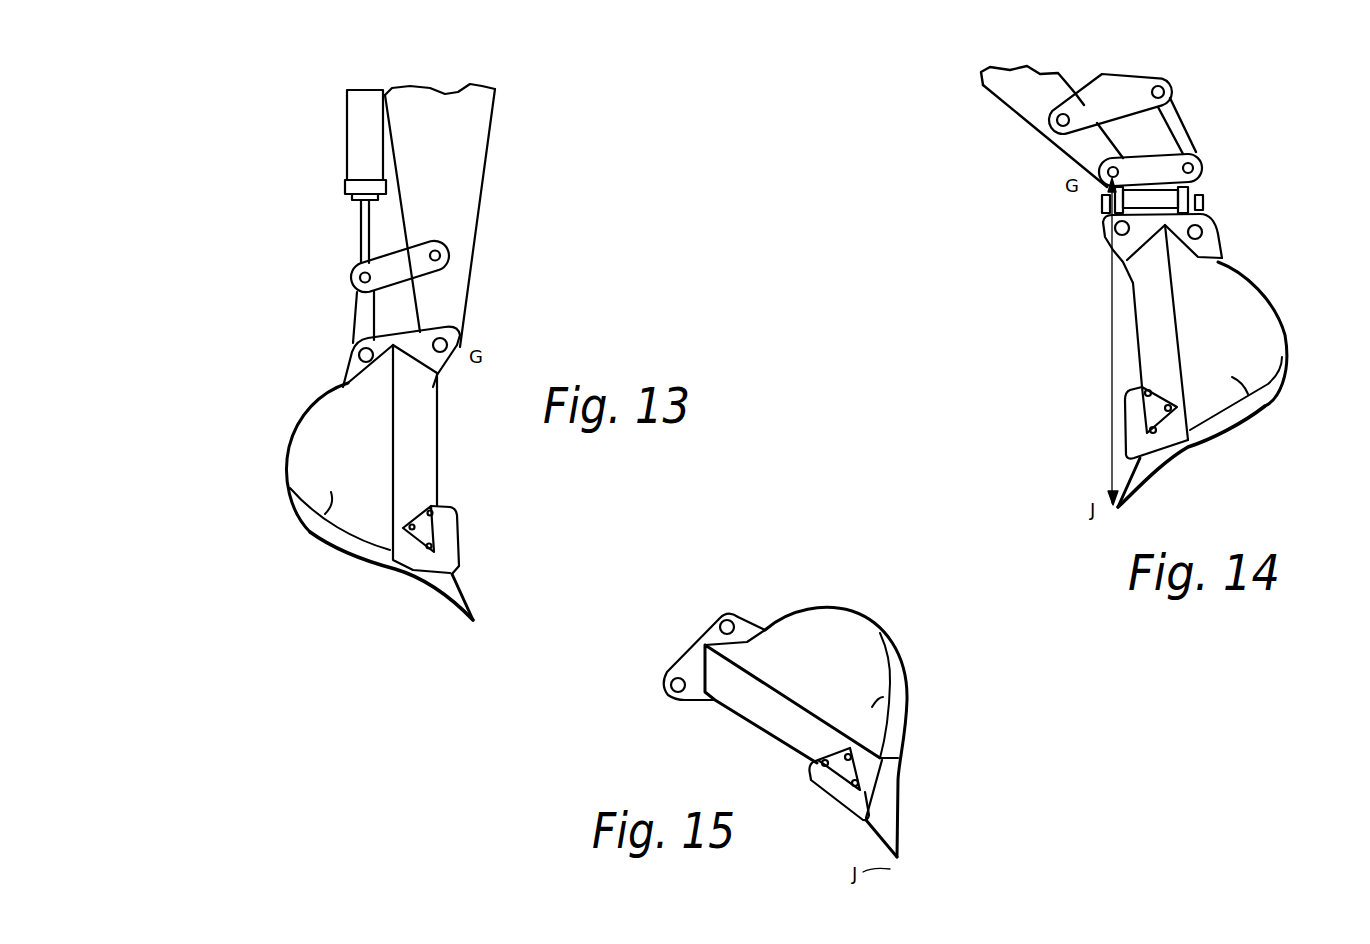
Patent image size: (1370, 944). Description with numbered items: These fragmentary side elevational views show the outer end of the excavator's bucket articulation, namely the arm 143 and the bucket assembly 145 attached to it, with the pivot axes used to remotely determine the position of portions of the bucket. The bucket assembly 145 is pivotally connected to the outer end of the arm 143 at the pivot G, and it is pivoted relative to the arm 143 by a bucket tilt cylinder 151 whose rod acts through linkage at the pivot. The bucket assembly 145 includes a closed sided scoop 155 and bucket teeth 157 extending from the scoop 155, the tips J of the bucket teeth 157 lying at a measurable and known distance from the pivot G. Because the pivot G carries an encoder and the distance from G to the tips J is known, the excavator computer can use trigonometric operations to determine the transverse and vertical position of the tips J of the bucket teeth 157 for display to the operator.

In FIG. 13, the arm 143 is at (475, 169).
In FIG. 14, the arm 143 is at (1013, 102).
In FIG. 13, the bucket assembly 145 is at (300, 443).
In FIG. 14, the bucket assembly 145 is at (1273, 307).
In FIG. 15, the bucket assembly 145 is at (823, 622).
In FIG. 13, the bucket tilt cylinder 151 is at (355, 129).
In FIG. 13, the closed sided scoop 155 is at (313, 533).
In FIG. 14, the closed sided scoop 155 is at (1268, 401).
In FIG. 15, the closed sided scoop 155 is at (872, 707).
In FIG. 13, the bucket teeth 157 is at (470, 606).
In FIG. 14, the bucket teeth 157 is at (1135, 500).
In FIG. 15, the bucket teeth 157 is at (900, 843).